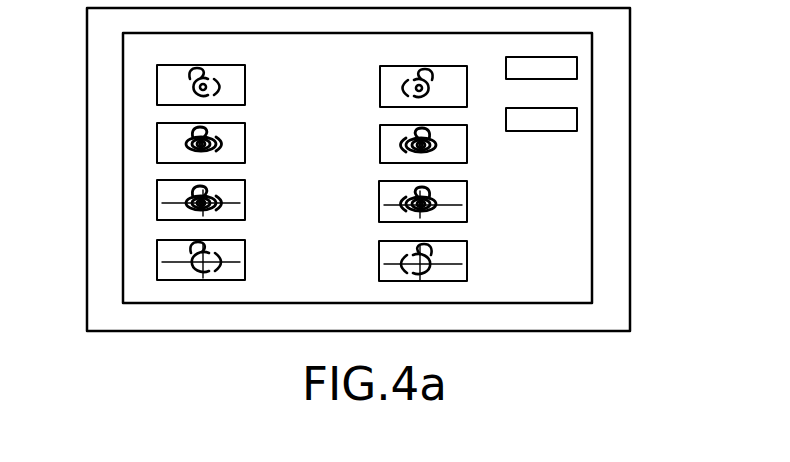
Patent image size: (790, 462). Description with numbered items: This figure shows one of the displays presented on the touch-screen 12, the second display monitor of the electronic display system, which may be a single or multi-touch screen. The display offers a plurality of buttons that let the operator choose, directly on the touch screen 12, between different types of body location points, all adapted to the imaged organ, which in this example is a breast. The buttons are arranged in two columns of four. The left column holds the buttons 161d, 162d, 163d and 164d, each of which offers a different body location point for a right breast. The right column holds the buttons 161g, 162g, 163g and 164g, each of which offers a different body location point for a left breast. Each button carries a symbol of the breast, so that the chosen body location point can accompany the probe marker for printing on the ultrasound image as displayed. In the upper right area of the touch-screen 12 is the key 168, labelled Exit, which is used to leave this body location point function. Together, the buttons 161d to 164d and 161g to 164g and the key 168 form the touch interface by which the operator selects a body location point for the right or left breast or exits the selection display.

The touch-screen 12 is at (617, 18).
The key 168 is at (568, 68).
The button 161d is at (177, 77).
The button 162d is at (172, 139).
The button 163d is at (173, 195).
The button 164d is at (173, 255).
The button 161g is at (392, 86).
The button 162g is at (391, 139).
The button 163g is at (391, 194).
The button 164g is at (391, 253).